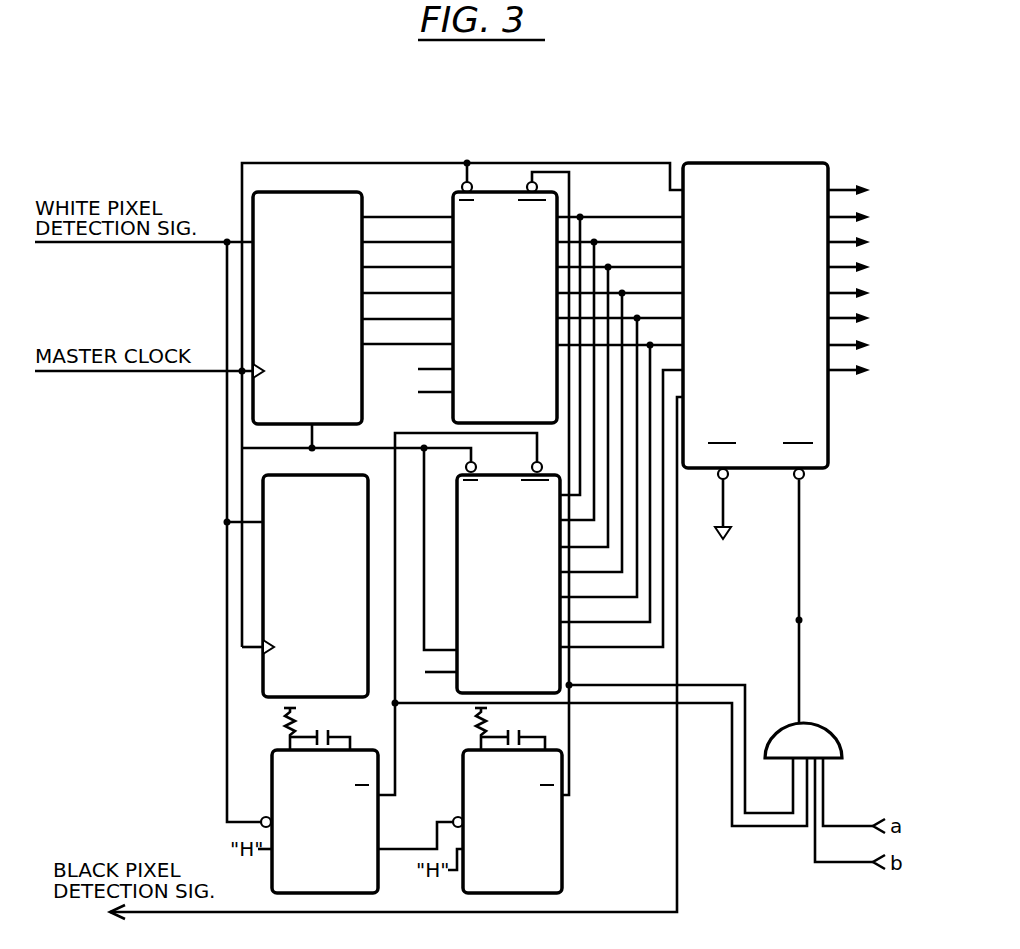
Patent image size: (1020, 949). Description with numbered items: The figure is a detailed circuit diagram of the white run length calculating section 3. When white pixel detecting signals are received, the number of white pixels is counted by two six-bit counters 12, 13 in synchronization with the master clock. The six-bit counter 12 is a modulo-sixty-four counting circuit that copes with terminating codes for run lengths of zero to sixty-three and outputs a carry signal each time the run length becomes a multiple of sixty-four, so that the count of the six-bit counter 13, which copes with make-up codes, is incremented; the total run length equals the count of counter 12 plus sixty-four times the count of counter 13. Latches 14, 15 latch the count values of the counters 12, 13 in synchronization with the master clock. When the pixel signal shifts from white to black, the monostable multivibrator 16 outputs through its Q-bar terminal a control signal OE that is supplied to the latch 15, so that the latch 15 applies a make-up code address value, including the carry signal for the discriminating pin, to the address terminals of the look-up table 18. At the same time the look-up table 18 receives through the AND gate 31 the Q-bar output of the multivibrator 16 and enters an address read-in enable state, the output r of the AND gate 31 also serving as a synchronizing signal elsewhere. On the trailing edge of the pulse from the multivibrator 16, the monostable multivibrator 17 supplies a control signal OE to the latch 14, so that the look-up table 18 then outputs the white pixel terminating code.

The white run length calculating section 3 is at (568, 138).
The 6-bit counter 12 is at (318, 192).
The 6-bit counter 13 is at (323, 697).
The latch 14 is at (500, 192).
The latch 15 is at (457, 688).
The monostable multivibrator 16 is at (378, 883).
The monostable multivibrator 17 is at (562, 885).
The look-up table 18 is at (758, 163).
The AND gate 31 is at (813, 723).
The output of AND gate r is at (799, 620).